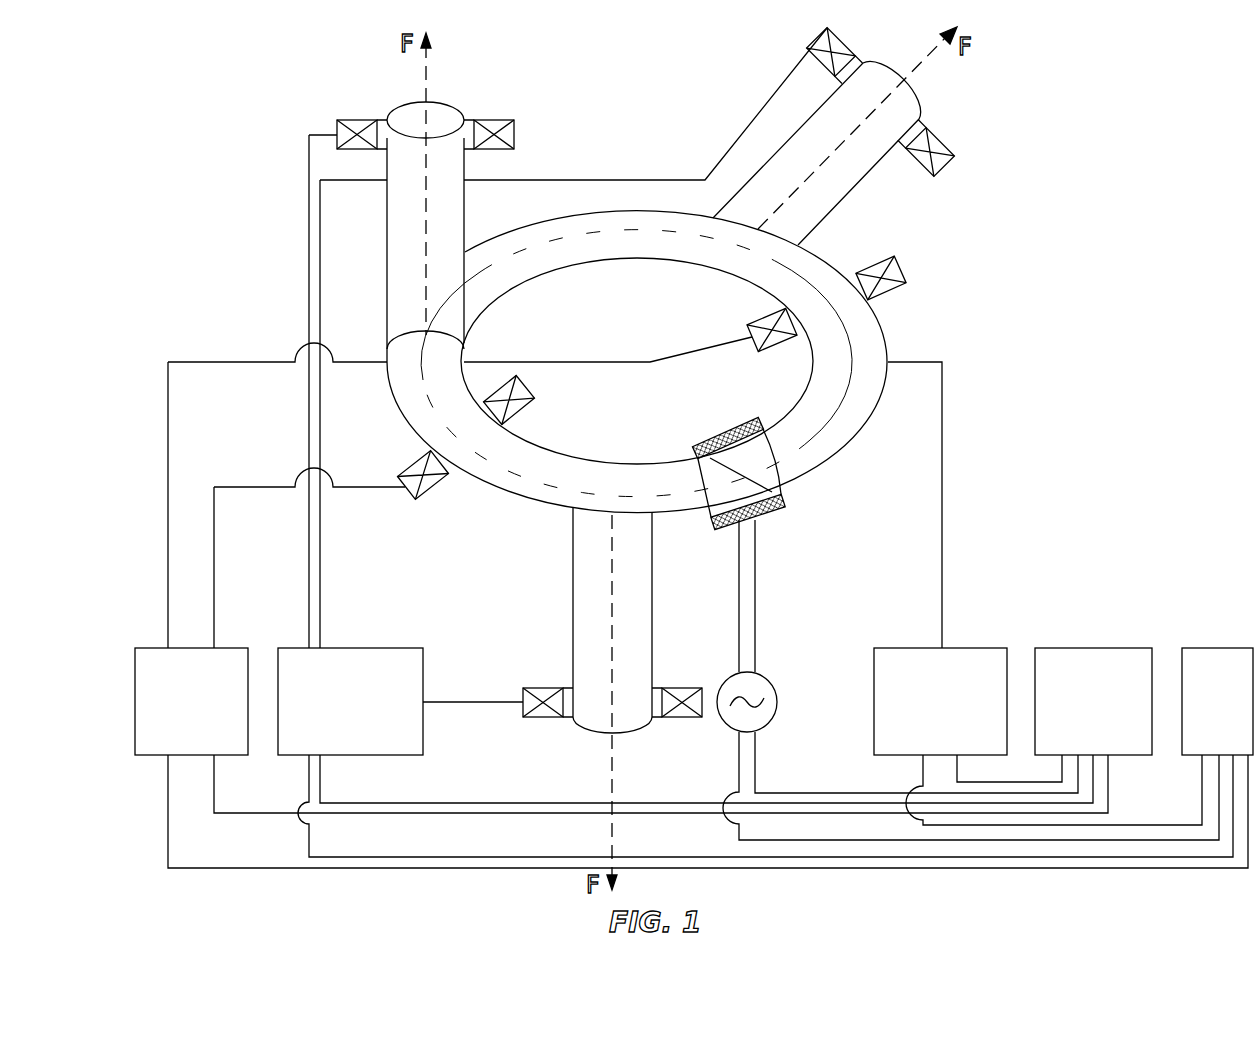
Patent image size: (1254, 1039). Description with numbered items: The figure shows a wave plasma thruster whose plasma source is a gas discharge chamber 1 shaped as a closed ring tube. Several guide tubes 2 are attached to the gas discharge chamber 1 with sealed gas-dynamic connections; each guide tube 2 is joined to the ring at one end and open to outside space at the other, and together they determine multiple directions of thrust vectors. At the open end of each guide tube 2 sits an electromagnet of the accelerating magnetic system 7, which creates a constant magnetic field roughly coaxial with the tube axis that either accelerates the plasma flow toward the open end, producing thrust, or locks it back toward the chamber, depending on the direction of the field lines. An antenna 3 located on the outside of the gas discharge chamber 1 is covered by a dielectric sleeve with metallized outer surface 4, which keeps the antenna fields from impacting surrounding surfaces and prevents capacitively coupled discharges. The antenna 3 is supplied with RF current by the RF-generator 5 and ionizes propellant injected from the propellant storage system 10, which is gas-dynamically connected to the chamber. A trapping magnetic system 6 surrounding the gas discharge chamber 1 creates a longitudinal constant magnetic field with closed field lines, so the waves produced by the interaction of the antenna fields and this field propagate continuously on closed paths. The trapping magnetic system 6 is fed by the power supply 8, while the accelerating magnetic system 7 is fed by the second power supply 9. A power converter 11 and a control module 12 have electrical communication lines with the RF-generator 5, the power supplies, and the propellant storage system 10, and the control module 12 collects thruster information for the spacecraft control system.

The gas discharge chamber 1 is at (820, 257).
The guide tube 2 is at (398, 241).
The antenna 3 is at (775, 468).
The dielectric sleeve with metallized outer surface 4 is at (723, 433).
The RF-generator 5 is at (775, 682).
The trapping magnetic system 6 is at (897, 271).
The accelerating magnetic system 7 is at (515, 135).
The power supply for trapping magnetic systems 8 is at (147, 707).
The power supply for accelerating magnetic systems 9 is at (372, 652).
The propellant storage system 10 is at (978, 653).
The power converter 11 is at (1212, 653).
The control module 12 is at (1088, 653).